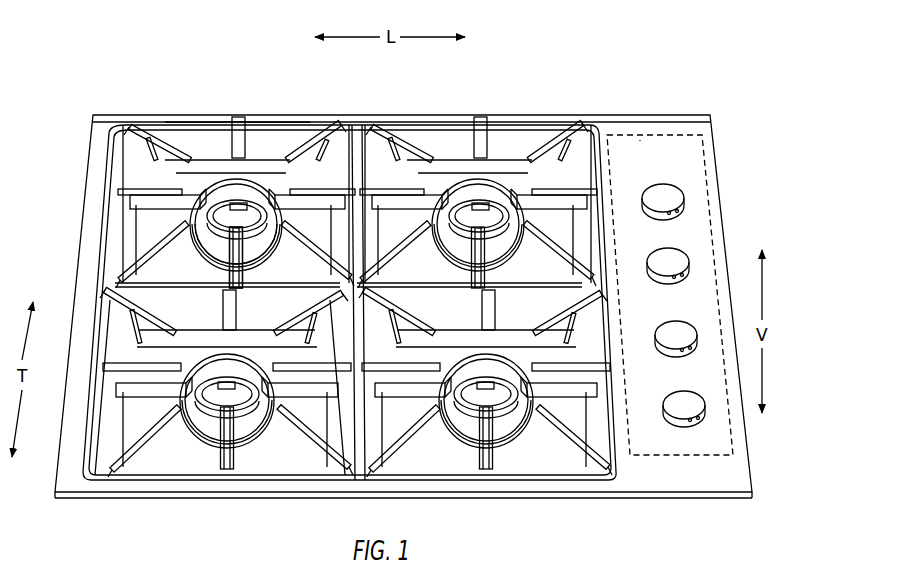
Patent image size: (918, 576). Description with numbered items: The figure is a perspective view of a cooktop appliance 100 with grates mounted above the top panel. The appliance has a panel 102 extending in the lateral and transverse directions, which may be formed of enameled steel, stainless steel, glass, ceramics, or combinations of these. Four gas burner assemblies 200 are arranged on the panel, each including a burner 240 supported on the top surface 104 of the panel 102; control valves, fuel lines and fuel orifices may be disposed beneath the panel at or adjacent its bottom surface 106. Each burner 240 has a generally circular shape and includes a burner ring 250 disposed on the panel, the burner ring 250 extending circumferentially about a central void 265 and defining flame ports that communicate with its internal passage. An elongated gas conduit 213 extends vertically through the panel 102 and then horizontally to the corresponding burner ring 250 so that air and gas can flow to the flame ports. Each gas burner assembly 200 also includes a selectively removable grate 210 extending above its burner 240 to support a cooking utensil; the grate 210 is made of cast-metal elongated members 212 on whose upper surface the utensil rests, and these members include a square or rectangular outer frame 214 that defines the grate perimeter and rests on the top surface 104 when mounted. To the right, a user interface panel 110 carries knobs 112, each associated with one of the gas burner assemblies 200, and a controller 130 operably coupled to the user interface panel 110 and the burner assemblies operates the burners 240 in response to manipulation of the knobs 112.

The cooktop appliance 100 is at (722, 96).
The panel 102 is at (280, 457).
The top surface 104 is at (147, 455).
The bottom surface 106 is at (200, 465).
The user interface panel 110 is at (684, 150).
The knobs 112 is at (677, 262).
The controller 130 is at (633, 135).
The gas burner assembly 200 is at (190, 113).
The grate 210 is at (133, 126).
The elongated members 212 is at (167, 188).
The elongated gas conduit 213 is at (148, 210).
The outer frame 214 is at (275, 122).
The burner 240 is at (265, 185).
The burner ring 250 is at (257, 253).
The central void 265 is at (220, 233).